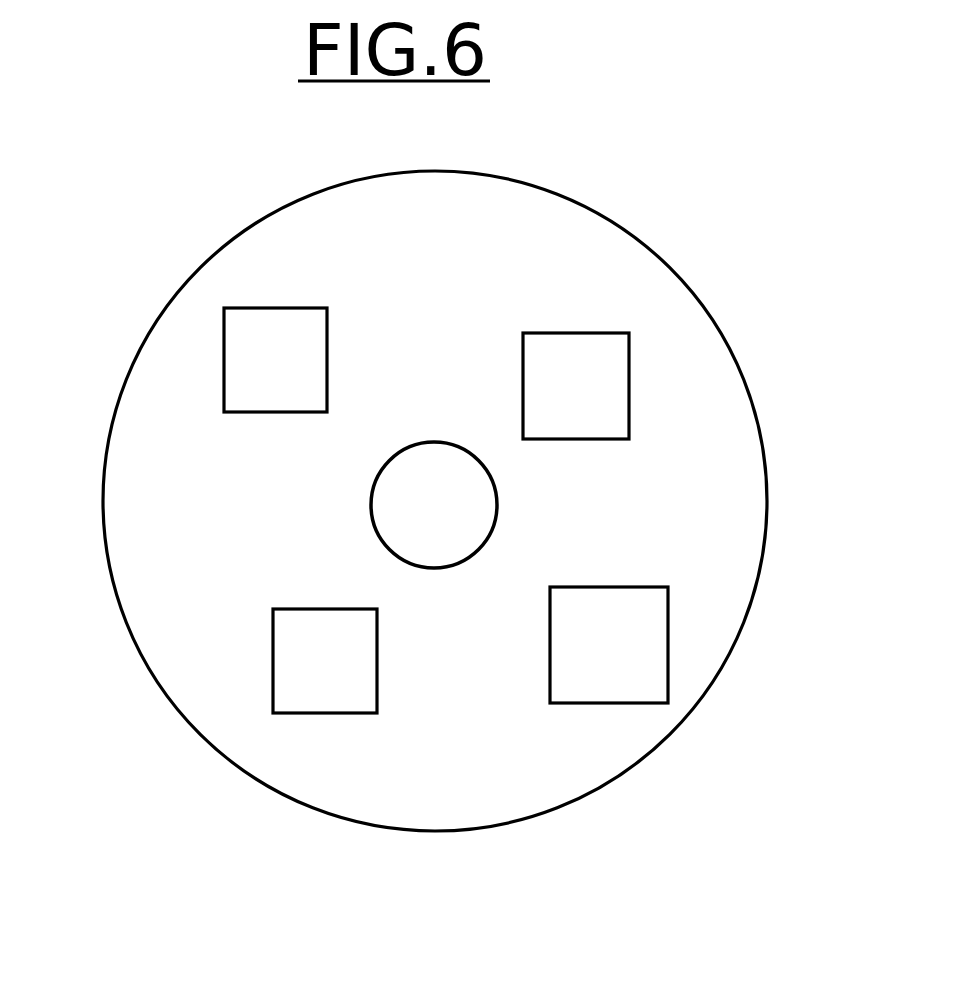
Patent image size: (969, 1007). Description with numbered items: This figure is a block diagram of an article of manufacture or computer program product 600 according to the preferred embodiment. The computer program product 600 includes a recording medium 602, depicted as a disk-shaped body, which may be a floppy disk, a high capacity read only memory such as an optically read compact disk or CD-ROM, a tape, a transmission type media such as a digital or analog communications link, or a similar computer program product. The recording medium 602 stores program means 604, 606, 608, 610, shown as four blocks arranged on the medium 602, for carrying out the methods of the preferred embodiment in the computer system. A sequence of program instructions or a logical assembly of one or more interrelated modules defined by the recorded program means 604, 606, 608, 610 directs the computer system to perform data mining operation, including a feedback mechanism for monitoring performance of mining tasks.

The computer program product 600 is at (724, 279).
The recording medium 602 is at (148, 302).
The program means 604 is at (576, 386).
The program means 606 is at (609, 645).
The program means 608 is at (325, 661).
The program means 610 is at (275, 360).